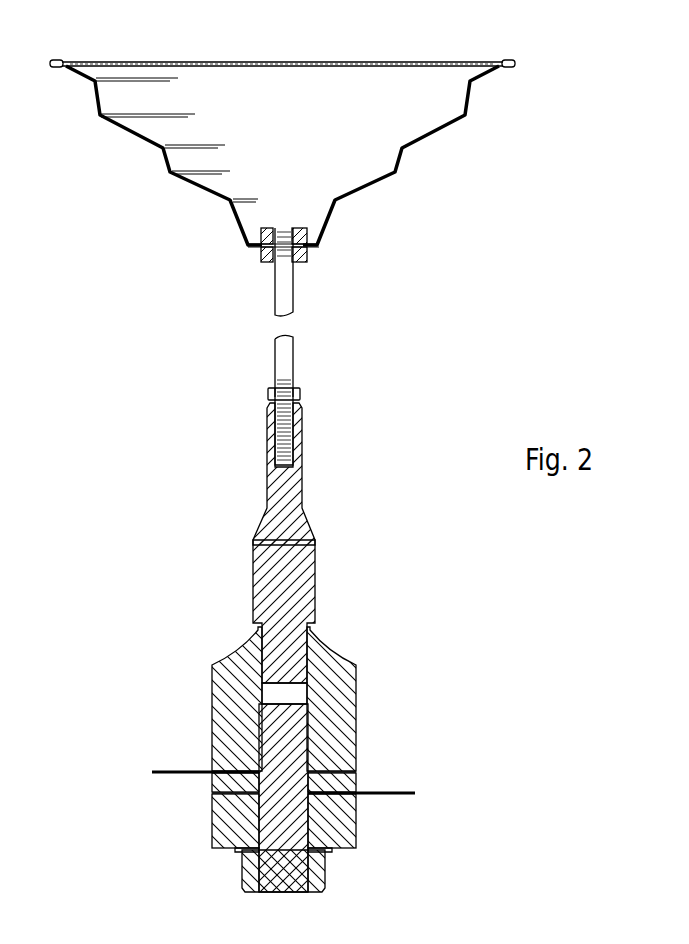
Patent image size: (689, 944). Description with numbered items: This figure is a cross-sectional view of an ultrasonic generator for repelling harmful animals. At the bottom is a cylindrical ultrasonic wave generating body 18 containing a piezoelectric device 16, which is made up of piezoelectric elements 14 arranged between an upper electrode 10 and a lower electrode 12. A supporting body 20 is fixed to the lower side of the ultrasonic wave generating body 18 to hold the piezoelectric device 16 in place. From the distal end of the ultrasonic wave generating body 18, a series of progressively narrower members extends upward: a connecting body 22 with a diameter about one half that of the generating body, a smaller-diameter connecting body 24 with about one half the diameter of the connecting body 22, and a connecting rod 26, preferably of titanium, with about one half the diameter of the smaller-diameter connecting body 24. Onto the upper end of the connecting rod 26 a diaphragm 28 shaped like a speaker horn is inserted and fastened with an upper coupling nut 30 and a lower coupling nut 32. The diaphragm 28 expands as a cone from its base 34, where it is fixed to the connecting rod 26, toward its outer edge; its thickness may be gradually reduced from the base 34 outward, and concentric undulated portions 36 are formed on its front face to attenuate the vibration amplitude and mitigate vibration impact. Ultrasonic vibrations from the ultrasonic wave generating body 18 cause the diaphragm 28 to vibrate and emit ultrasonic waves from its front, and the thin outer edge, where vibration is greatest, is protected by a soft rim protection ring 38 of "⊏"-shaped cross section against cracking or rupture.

The upper electrode 10 is at (181, 770).
The lower electrode 12 is at (388, 792).
The piezoelectric element 14 is at (222, 816).
The piezoelectric device 16 is at (190, 799).
The ultrasonic wave generating body 18 is at (355, 708).
The supporting body 20 is at (345, 826).
The connecting body 22 is at (300, 580).
The smaller-diameter connecting body 24 is at (300, 478).
The connecting rod 26 is at (291, 341).
The diaphragm 28 is at (224, 59).
The upper coupling nut 30 is at (298, 228).
The lower coupling nut 32 is at (302, 262).
The base 34 is at (252, 246).
The undulated portions 36 is at (168, 146).
The rim protection ring 38 is at (57, 59).